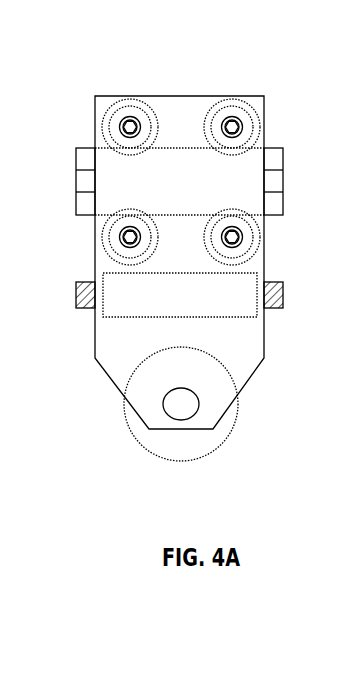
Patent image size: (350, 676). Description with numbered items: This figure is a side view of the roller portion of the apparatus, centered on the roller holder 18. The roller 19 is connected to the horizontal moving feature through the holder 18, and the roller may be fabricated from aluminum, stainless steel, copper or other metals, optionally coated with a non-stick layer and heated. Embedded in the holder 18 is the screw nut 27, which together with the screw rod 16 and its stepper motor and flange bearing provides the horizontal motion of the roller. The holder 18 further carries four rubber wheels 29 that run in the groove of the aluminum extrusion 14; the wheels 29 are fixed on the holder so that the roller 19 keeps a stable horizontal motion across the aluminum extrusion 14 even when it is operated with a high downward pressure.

The aluminum extrusion 14 is at (85, 160).
The screw rod 16 is at (85, 278).
The roller holder 18 is at (121, 356).
The roller 19 is at (152, 443).
The screw nut 27 is at (242, 295).
The rubber wheels 29 is at (232, 103).